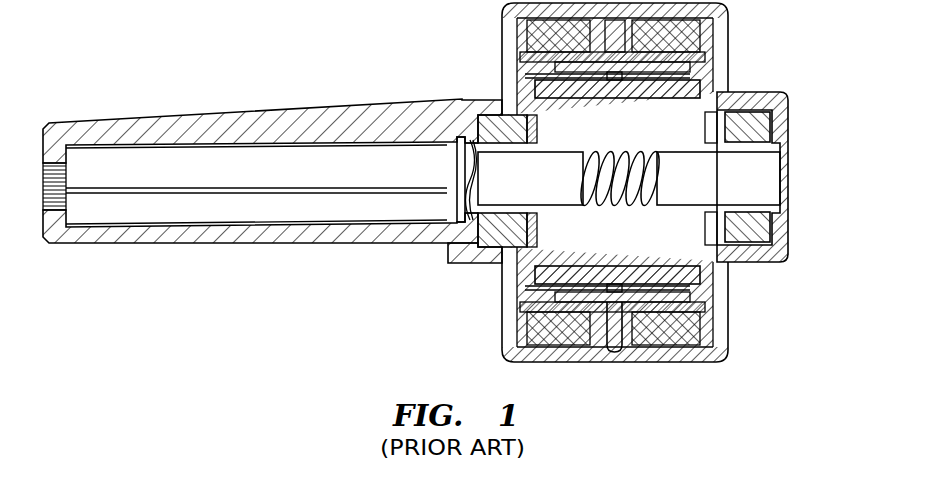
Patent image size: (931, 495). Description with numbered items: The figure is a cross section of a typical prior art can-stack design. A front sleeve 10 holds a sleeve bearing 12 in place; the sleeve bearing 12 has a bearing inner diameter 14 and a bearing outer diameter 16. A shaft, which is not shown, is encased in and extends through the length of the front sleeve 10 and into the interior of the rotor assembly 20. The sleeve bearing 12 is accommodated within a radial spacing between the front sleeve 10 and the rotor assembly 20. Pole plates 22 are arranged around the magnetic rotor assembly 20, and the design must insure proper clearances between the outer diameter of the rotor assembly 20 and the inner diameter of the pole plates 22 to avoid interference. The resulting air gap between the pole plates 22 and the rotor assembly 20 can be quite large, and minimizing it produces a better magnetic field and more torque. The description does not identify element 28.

The front sleeve 10 is at (253, 114).
The sleeve bearing 12 is at (488, 258).
The bearing inner diameter 14 is at (467, 101).
The bearing outer diameter 16 is at (497, 100).
The rotor assembly 20 is at (731, 264).
The pole plates 22 is at (613, 353).
The connector housing 28 is at (714, 90).